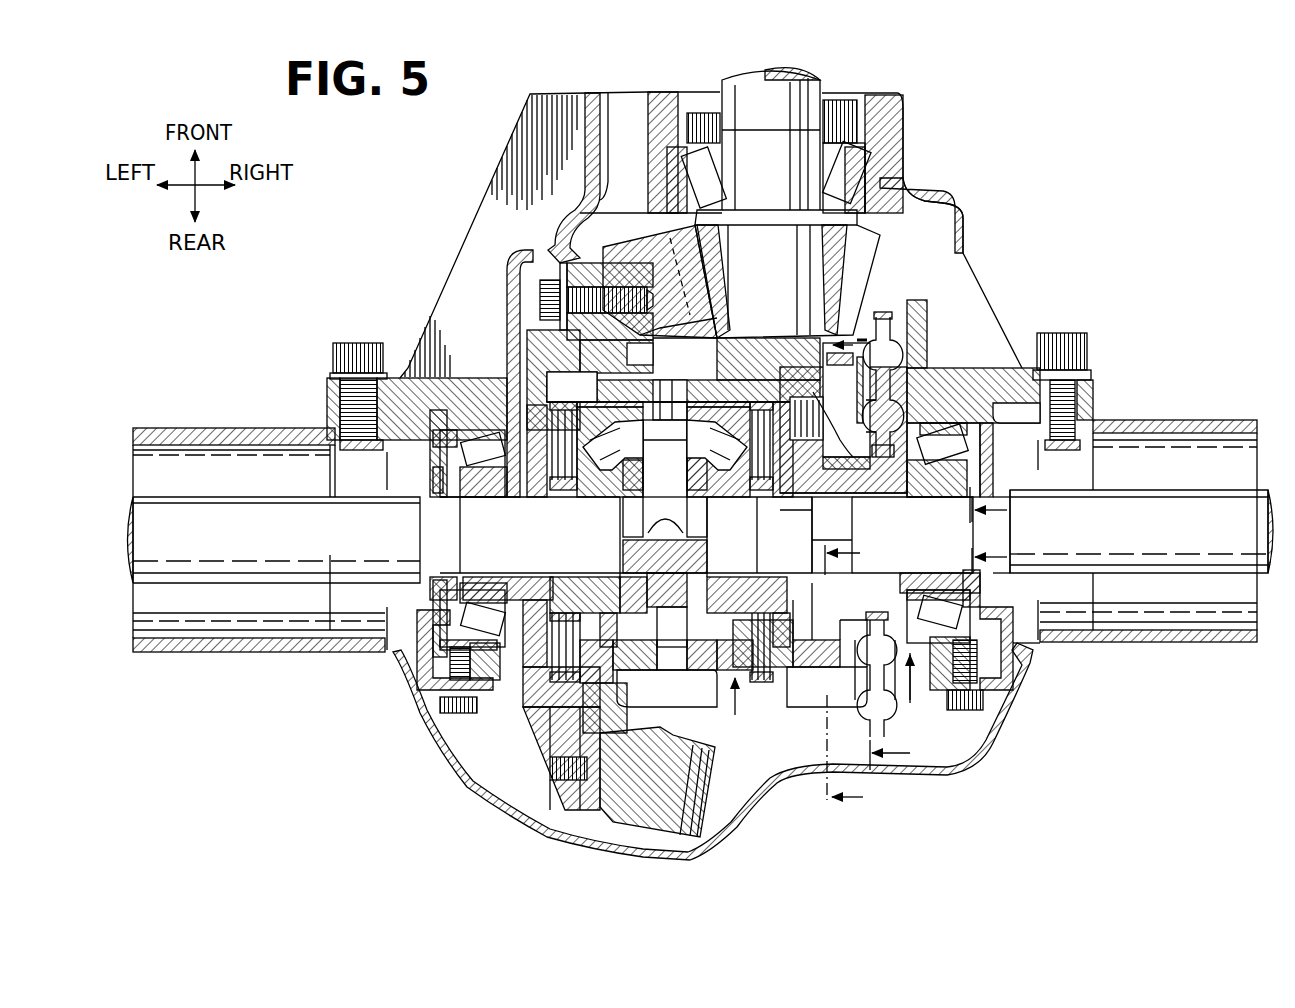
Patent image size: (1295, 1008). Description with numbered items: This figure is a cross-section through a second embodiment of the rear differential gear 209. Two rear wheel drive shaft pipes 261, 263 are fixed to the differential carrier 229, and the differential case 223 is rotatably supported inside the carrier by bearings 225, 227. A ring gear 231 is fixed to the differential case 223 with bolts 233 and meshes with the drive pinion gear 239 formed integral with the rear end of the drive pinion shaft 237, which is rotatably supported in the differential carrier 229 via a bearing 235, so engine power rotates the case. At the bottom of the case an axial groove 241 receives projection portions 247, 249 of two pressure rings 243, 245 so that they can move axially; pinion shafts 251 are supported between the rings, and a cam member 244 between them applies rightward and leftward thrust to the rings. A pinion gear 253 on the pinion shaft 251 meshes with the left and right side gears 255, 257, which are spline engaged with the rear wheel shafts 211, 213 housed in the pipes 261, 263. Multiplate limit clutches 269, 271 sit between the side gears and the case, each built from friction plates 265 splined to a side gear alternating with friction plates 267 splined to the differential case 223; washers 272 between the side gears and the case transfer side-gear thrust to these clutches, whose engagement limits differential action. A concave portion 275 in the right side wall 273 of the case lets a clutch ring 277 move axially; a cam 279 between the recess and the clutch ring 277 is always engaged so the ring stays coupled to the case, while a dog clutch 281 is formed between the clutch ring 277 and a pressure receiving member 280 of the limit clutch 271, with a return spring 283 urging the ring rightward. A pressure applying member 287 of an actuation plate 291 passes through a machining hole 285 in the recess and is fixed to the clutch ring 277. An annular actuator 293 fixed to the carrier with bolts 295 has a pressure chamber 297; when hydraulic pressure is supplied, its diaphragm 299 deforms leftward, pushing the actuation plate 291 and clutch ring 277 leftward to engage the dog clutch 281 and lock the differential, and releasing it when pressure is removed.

The rear differential gear 209 is at (350, 332).
The rear wheel shaft 211 is at (243, 512).
The rear wheel shaft 213 is at (1170, 497).
The differential case 223 is at (557, 238).
The bearing 225 is at (482, 497).
The bearing 227 is at (947, 487).
The differential carrier 229 is at (965, 215).
The ring gear 231 is at (637, 248).
The bolt 233 is at (540, 300).
The bearing 235 is at (880, 165).
The drive pinion shaft 237 is at (810, 92).
The drive pinion gear 239 is at (803, 270).
The axial groove 241 is at (687, 678).
The pressure ring 243 is at (645, 628).
The cam member 244 is at (700, 380).
The pressure ring 245 is at (718, 640).
The projection portion 247 is at (548, 695).
The projection portion 249 is at (767, 690).
The pinion shaft 251 is at (668, 390).
The pinion gear 253 is at (634, 452).
The side gear 255 is at (600, 497).
The side gear 257 is at (735, 497).
The rear wheel drive shaft pipe 261 is at (232, 428).
The rear wheel drive shaft pipe 263 is at (1168, 420).
The friction plate 265 is at (560, 497).
The friction plate 267 is at (603, 403).
The limit clutch 269 is at (543, 377).
The limit clutch 271 is at (882, 308).
The washer 272 is at (555, 600).
The right side wall 273 is at (887, 457).
The concave portion 275 is at (815, 420).
The clutch ring 277 is at (840, 637).
The cam 279 is at (848, 625).
The pressure receiving member 280 is at (793, 662).
The dog clutch 281 is at (833, 460).
The return spring 283 is at (848, 447).
The machining hole 285 is at (805, 708).
The pressure applying member 287 is at (917, 603).
The actuation plate 291 is at (868, 712).
The actuator 293 is at (885, 340).
The bolt 295 is at (935, 695).
The pressure chamber 297 is at (882, 352).
The diaphragm 299 is at (873, 362).